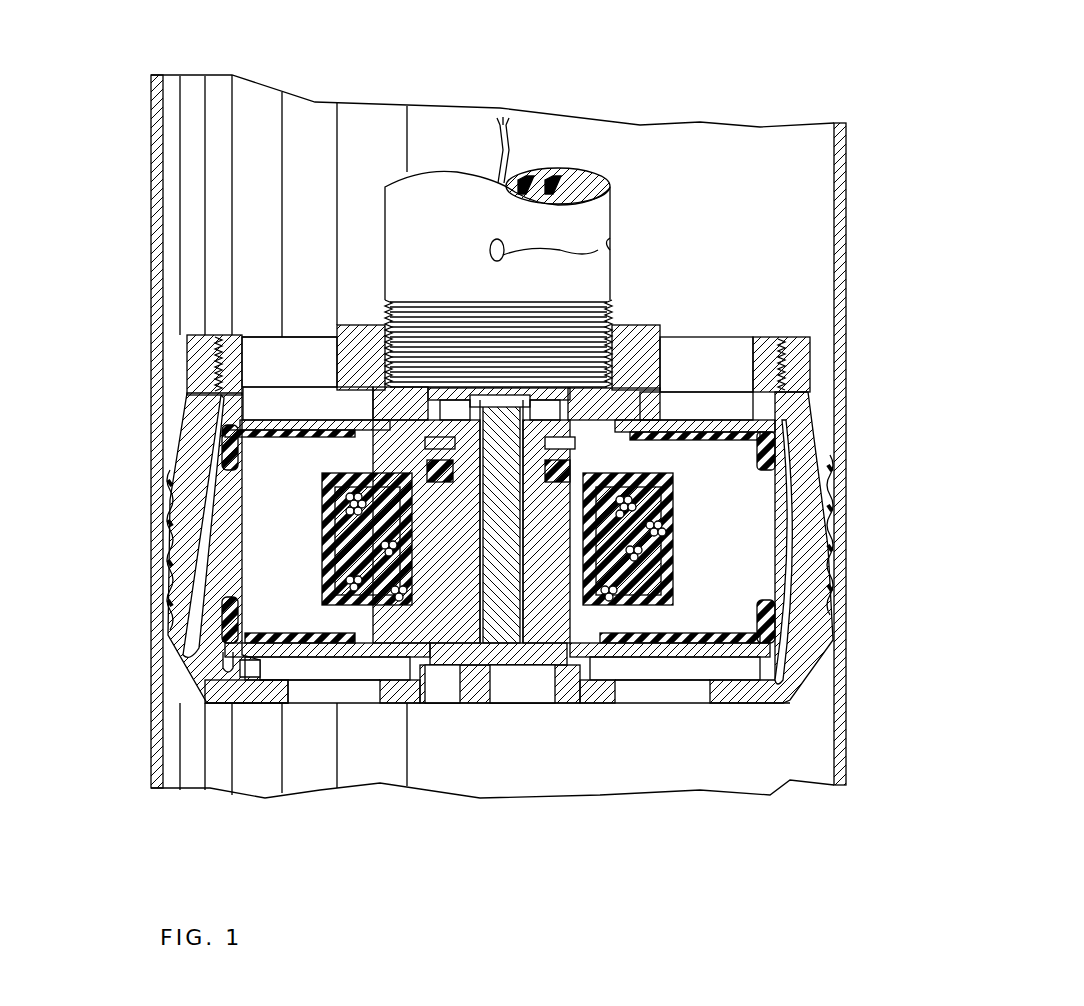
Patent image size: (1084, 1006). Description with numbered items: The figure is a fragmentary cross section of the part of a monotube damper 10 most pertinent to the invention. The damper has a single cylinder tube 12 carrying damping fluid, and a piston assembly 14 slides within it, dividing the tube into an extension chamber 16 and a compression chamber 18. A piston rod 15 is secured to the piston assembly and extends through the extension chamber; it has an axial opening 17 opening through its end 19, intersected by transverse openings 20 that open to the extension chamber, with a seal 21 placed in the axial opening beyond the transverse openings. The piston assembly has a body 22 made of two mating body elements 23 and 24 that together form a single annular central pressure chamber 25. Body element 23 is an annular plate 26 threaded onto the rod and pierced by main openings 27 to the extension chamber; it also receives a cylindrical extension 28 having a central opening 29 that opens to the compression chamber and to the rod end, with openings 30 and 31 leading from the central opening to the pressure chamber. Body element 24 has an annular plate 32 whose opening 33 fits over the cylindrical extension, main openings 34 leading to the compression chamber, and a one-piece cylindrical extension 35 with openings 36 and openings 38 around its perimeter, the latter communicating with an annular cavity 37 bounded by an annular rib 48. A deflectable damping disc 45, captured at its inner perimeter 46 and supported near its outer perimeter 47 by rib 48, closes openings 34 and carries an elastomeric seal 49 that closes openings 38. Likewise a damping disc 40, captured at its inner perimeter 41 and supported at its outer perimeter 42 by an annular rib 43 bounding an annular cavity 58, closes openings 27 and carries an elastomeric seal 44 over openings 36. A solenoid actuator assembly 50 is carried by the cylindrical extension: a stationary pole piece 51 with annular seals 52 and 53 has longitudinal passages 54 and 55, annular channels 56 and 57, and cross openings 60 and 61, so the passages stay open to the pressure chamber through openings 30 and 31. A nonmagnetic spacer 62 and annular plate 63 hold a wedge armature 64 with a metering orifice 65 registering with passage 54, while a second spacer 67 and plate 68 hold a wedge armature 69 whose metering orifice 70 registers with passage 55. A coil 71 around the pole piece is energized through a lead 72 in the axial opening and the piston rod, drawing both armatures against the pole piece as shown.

The monotube damper 10 is at (880, 185).
The cylinder tube 12 is at (846, 290).
The piston assembly 14 is at (820, 364).
The piston rod 15 is at (612, 220).
The extension chamber 16 is at (765, 246).
The axial opening 17 is at (553, 180).
The compression chamber 18 is at (798, 766).
The end 19 is at (372, 385).
The transverse openings 20 is at (610, 250).
The seal 21 is at (527, 178).
The body 22 is at (822, 405).
The body element 23 is at (767, 345).
The body element 24 is at (800, 683).
The pressure chamber 25 is at (735, 544).
The annular plate 26 is at (595, 625).
The main openings 27 is at (333, 363).
The cylindrical extension 28 is at (575, 592).
The central opening 29 is at (575, 555).
The opening 30 is at (607, 443).
The opening 31 is at (450, 630).
The annular plate 32 is at (605, 703).
The opening 33 is at (552, 650).
The main openings 34 is at (710, 690).
The cylindrical extension 35 is at (185, 407).
The openings 36 is at (205, 510).
The annular cavity 37 is at (218, 663).
The openings 38 is at (805, 497).
The damping disc 40 is at (712, 410).
The inner perimeter 41 is at (610, 418).
The outer perimeter 42 is at (775, 425).
The annular rib 43 is at (257, 395).
The elastomeric seal 44 is at (758, 455).
The damping disc 45 is at (300, 653).
The inner perimeter 46 is at (437, 660).
The outer perimeter 47 is at (225, 647).
The annular rib 48 is at (240, 662).
The elastomeric seal 49 is at (757, 630).
The solenoid actuator assembly 50 is at (315, 558).
The pole piece 51 is at (433, 533).
The annular seal 52 is at (440, 595).
The annular seal 53 is at (433, 463).
The longitudinal passage 54 is at (476, 487).
The longitudinal passage 55 is at (517, 485).
The annular channel 56 is at (420, 430).
The annular channel 57 is at (433, 628).
The annular cavity 58 is at (770, 412).
The cross opening 60 is at (430, 445).
The cross opening 61 is at (525, 630).
The nonmagnetic spacer 62 is at (575, 395).
The annular plate 63 is at (432, 393).
The wedge armature 64 is at (513, 400).
The metering orifice 65 is at (477, 400).
The nonmagnetic spacer 67 is at (557, 657).
The annular plate 68 is at (460, 650).
The wedge armature 69 is at (493, 653).
The metering orifice 70 is at (513, 657).
The coil 71 is at (660, 530).
The lead 72 is at (480, 145).